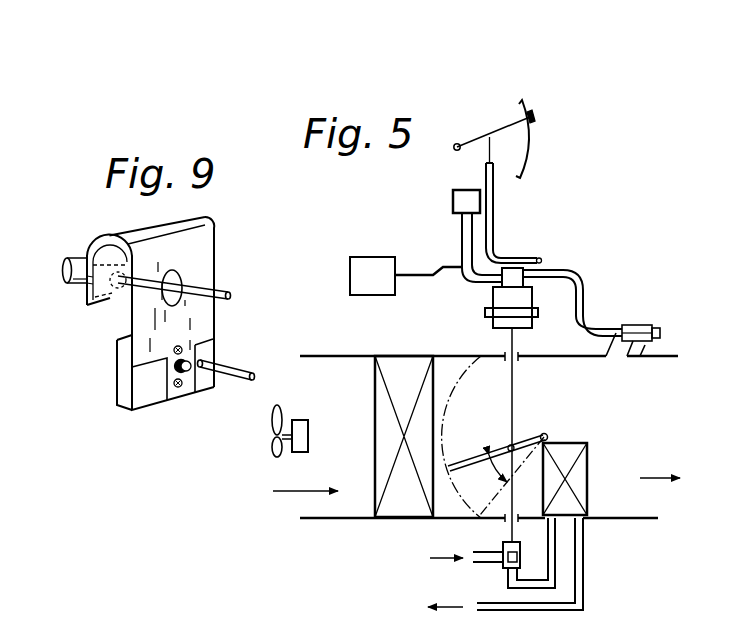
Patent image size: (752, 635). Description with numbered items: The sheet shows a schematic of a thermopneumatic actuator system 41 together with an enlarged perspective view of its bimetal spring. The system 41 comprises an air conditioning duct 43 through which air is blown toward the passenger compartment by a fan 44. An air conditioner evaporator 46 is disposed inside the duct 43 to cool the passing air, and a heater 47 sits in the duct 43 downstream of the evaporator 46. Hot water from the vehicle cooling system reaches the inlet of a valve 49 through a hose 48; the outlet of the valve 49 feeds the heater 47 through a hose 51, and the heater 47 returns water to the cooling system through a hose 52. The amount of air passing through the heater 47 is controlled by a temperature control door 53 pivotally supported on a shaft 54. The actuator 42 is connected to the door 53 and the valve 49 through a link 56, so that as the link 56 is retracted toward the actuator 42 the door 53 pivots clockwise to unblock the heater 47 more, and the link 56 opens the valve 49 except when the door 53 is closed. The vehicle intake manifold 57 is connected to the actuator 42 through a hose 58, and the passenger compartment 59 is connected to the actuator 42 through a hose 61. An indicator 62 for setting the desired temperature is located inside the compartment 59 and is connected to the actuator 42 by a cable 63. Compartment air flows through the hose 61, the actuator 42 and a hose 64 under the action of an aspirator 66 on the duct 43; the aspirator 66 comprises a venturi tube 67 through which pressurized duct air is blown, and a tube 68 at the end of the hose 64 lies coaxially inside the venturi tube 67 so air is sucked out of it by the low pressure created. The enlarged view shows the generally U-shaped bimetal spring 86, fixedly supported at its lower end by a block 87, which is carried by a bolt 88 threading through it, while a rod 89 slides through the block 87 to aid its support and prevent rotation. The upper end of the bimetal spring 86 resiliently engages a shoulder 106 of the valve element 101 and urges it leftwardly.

In FIG. 5, the system 41 is at (627, 187).
In FIG. 5, the actuator 42 is at (493, 303).
In FIG. 5, the air conditioning duct 43 is at (313, 357).
In FIG. 5, the fan 44 is at (272, 456).
In FIG. 5, the air conditioner evaporator 46 is at (375, 445).
In FIG. 5, the heater 47 is at (587, 490).
In FIG. 5, the hose 48 is at (487, 568).
In FIG. 5, the valve 49 is at (492, 552).
In FIG. 5, the hose 51 is at (567, 559).
In FIG. 5, the hose 52 is at (583, 592).
In FIG. 5, the temperature control door 53 is at (470, 462).
In FIG. 5, the shaft 54 is at (547, 437).
In FIG. 5, the link 56 is at (511, 402).
In FIG. 5, the intake manifold 57 is at (365, 257).
In FIG. 5, the hose 58 is at (417, 275).
In FIG. 5, the passenger compartment 59 is at (453, 200).
In FIG. 5, the hose 61 is at (467, 237).
In FIG. 5, the indicator 62 is at (533, 141).
In FIG. 5, the cable 63 is at (493, 205).
In FIG. 5, the hose 64 is at (583, 281).
In FIG. 5, the aspirator 66 is at (642, 288).
In FIG. 5, the venturi tube 67 is at (643, 357).
In FIG. 5, the tube 68 is at (630, 325).
In FIG. 9, the bimetal spring 86 is at (203, 255).
In FIG. 9, the block 87 is at (140, 387).
In FIG. 9, the bolt 88 is at (188, 363).
In FIG. 9, the rod 89 is at (236, 374).
In FIG. 9, the valve element 101 is at (230, 296).
In FIG. 9, the shoulder 106 is at (74, 285).